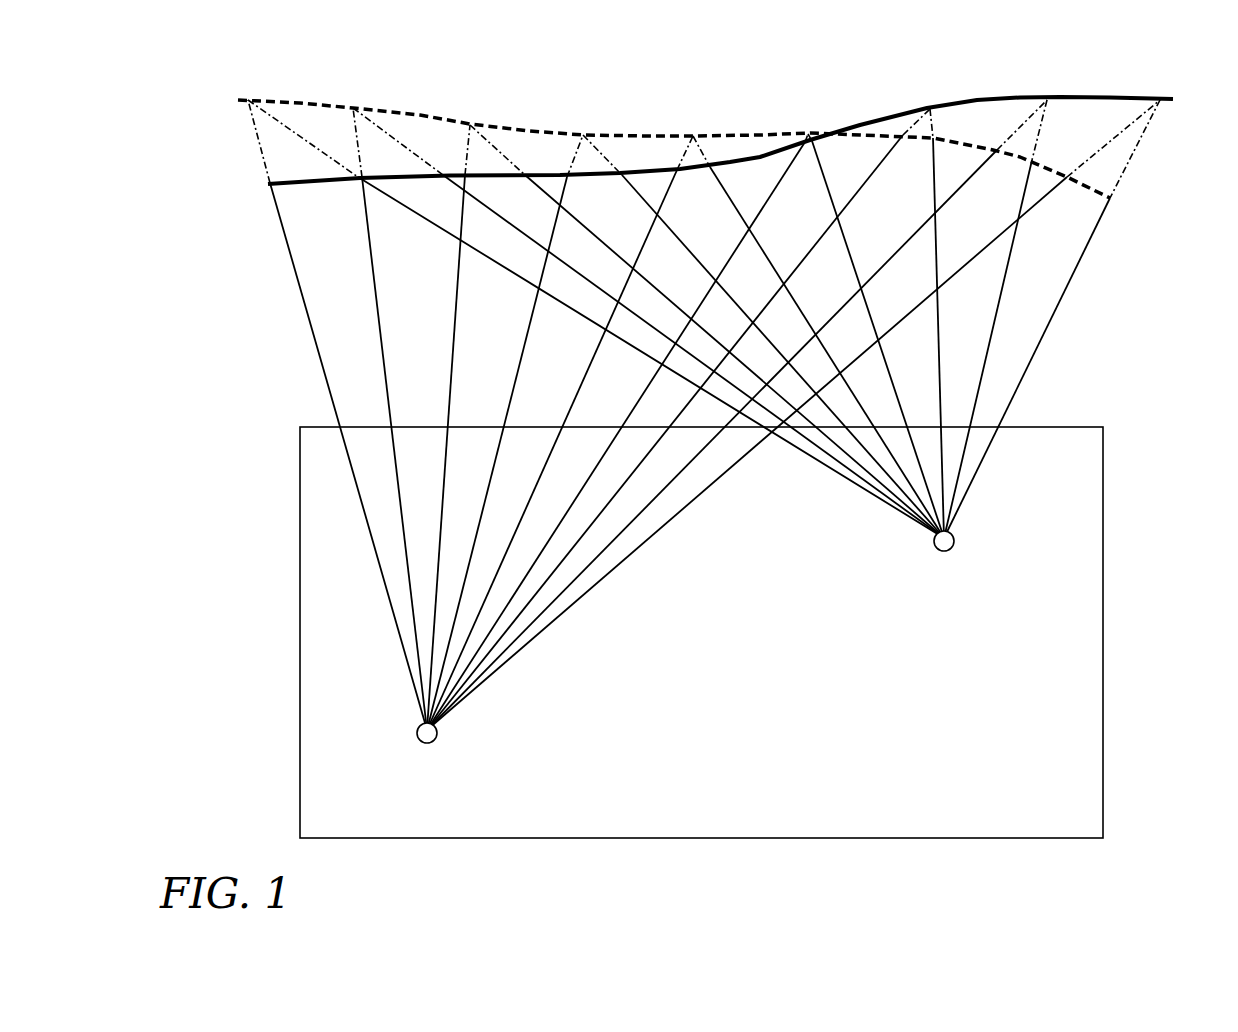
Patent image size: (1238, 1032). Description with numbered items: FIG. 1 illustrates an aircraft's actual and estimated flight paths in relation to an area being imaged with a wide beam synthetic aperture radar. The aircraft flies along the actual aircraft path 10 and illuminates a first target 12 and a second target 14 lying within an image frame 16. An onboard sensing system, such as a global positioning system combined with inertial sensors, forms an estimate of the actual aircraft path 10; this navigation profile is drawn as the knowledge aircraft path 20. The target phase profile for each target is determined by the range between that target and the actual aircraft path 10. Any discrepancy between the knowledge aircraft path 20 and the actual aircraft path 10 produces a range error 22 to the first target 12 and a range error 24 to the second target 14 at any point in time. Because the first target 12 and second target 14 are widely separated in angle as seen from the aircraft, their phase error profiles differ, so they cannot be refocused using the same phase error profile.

The actual aircraft path 10 is at (1023, 98).
The first target 12 is at (438, 732).
The second target 14 is at (928, 546).
The image frame 16 is at (1103, 642).
The knowledge aircraft path 20 is at (421, 112).
The range error 22 is at (1098, 155).
The range error 24 is at (1150, 122).